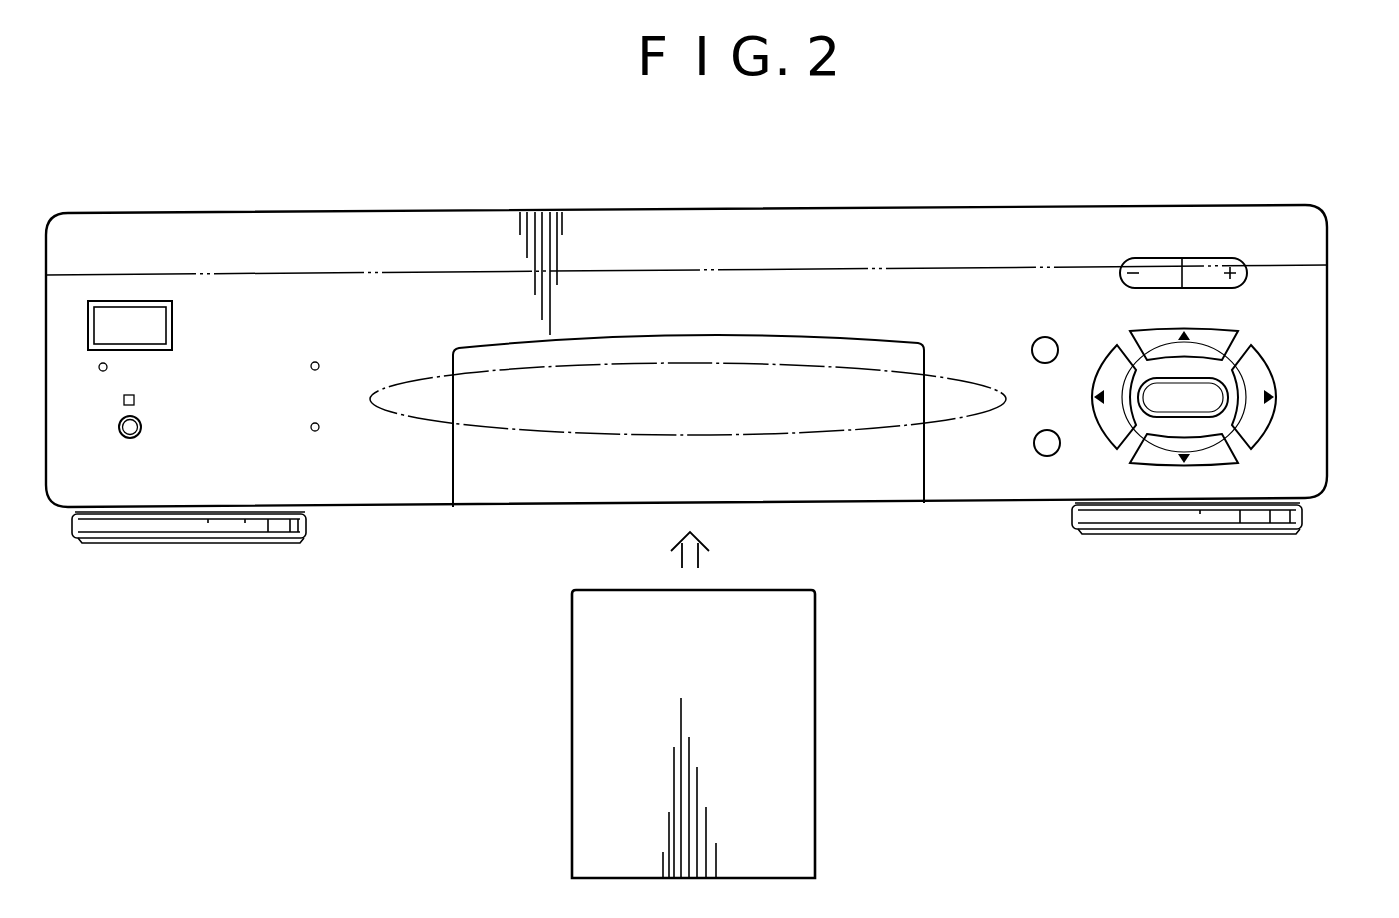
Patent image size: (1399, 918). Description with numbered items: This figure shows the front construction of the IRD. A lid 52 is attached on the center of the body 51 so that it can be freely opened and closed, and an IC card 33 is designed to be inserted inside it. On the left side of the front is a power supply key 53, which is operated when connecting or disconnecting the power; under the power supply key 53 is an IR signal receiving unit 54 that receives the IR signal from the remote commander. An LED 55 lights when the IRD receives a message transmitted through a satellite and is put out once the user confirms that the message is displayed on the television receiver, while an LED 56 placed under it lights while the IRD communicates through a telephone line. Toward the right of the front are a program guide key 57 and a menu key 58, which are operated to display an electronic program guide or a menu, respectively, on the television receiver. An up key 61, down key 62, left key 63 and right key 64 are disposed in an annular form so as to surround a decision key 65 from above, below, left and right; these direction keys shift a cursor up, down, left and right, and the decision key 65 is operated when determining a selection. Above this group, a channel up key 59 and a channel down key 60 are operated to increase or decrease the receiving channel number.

The IC card 33 is at (572, 741).
The body 51 is at (860, 208).
The lid 52 is at (515, 507).
The power supply key 53 is at (126, 300).
The IR signal receiving unit 54 is at (130, 439).
The LED 55 is at (319, 363).
The LED 56 is at (319, 431).
The program guide key 57 is at (1031, 352).
The menu key 58 is at (1042, 457).
The channel up key 59 is at (1213, 258).
The channel down key 60 is at (1153, 258).
The up key 61 is at (1238, 331).
The down key 62 is at (1238, 463).
The left key 63 is at (1106, 440).
The right key 64 is at (1274, 408).
The decision key 65 is at (1228, 392).